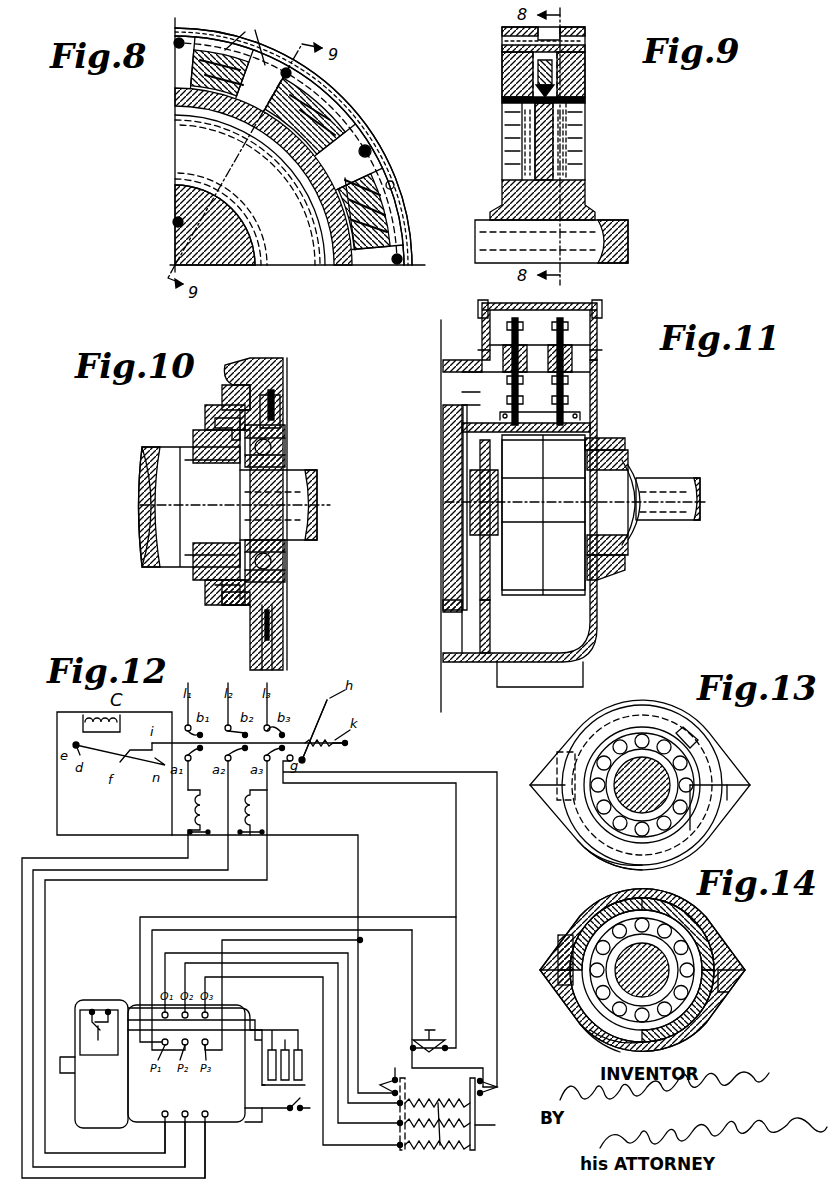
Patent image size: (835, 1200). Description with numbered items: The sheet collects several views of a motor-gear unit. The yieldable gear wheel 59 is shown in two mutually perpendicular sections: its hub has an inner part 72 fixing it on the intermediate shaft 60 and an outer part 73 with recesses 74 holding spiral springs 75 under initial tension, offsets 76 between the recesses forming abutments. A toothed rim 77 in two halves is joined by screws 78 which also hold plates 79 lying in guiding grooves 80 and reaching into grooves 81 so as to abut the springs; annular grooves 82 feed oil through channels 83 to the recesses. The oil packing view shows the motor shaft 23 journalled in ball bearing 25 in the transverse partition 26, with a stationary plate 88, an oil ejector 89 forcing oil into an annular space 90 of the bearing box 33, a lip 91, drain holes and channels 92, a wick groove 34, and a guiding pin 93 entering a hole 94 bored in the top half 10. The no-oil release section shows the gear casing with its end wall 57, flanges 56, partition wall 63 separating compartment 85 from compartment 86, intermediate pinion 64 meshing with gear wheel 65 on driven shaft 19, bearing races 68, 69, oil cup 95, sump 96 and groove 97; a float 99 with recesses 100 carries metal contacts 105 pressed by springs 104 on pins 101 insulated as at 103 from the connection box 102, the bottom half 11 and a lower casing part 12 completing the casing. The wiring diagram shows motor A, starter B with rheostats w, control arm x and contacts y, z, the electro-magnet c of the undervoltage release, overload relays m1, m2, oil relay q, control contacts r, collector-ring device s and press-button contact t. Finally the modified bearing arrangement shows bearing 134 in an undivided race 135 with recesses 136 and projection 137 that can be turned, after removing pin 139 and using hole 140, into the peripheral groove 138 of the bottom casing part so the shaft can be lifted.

In FIG. 11, the top half of the casing 10 is at (570, 418).
In FIG. 13, the top half of the casing 10 is at (710, 745).
In FIG. 14, the top half of the casing 10 is at (585, 903).
In FIG. 11, the bottom half of the casing 11 is at (458, 660).
In FIG. 13, the bottom half of the casing 11 is at (732, 820).
In FIG. 14, the bottom half of the casing 11 is at (560, 1008).
In FIG. 11, the mounting flange 12 is at (583, 676).
In FIG. 11, the driven shaft 19 is at (668, 478).
In FIG. 10, the motor shaft 23 is at (290, 492).
In FIG. 10, the ball bearing 25 is at (285, 555).
In FIG. 10, the transverse partition 26 is at (270, 360).
In FIG. 10, the bearing box 33 is at (200, 445).
In FIG. 10, the groove 34 is at (238, 385).
In FIG. 11, the longitudinal flanges 56 is at (485, 640).
In FIG. 11, the end wall of the casing 57 is at (597, 625).
In FIG. 8, the gear wheel 59 is at (175, 152).
In FIG. 9, the gear wheel 59 is at (585, 138).
In FIG. 11, the gear wheel 59 is at (452, 500).
In FIG. 9, the intermediate shaft 60 is at (585, 242).
In FIG. 13, the intermediate shaft 60 is at (614, 790).
In FIG. 11, the partition wall 63 is at (470, 580).
In FIG. 11, the pinion 64 is at (620, 558).
In FIG. 11, the gear wheel 65 is at (605, 578).
In FIG. 11, the bearing race 68 is at (632, 470).
In FIG. 11, the bearing race 69 is at (475, 478).
In FIG. 8, the inner part of the hub 72 is at (240, 255).
In FIG. 9, the inner part of the hub 72 is at (585, 190).
In FIG. 8, the outer part of the hub 73 is at (350, 252).
In FIG. 9, the outer part of the hub 73 is at (585, 66).
In FIG. 8, the recesses 74 is at (330, 140).
In FIG. 9, the recesses 74 is at (552, 88).
In FIG. 8, the spiral springs 75 is at (385, 230).
In FIG. 9, the spiral springs 75 is at (585, 50).
In FIG. 9, the offsets 76 is at (550, 72).
In FIG. 8, the toothed rim 77 is at (385, 200).
In FIG. 9, the toothed rim 77 is at (585, 32).
In FIG. 8, the screws 78 is at (375, 178).
In FIG. 9, the screws 78 is at (502, 41).
In FIG. 8, the plates 79 is at (350, 160).
In FIG. 9, the plates 79 is at (548, 36).
In FIG. 8, the guiding grooves 80 is at (245, 32).
In FIG. 9, the grooves 81 is at (522, 115).
In FIG. 9, the annular grooves 82 is at (522, 145).
In FIG. 9, the channels 83 is at (585, 100).
In FIG. 11, the compartment 85 is at (463, 637).
In FIG. 11, the compartment 86 is at (545, 640).
In FIG. 10, the stationary plate 88 is at (283, 588).
In FIG. 10, the oil ejector 89 is at (210, 585).
In FIG. 10, the annular space 90 is at (212, 408).
In FIG. 10, the lip 91 is at (225, 423).
In FIG. 10, the holes and channels 92 is at (272, 640).
In FIG. 10, the guiding pin 93 is at (280, 400).
In FIG. 10, the hole 94 is at (275, 395).
In FIG. 11, the oil cup 95 is at (462, 410).
In FIG. 11, the oil sump 96 is at (483, 445).
In FIG. 11, the groove 97 is at (478, 404).
In FIG. 11, the float 99 is at (565, 400).
In FIG. 11, the recesses 100 is at (580, 416).
In FIG. 11, the pins 101 is at (590, 345).
In FIG. 11, the connection box 102 is at (597, 307).
In FIG. 11, the insulation 103 is at (597, 355).
In FIG. 11, the spring 104 is at (520, 395).
In FIG. 11, the metal contacts 105 is at (480, 425).
In FIG. 13, the bearing 134 is at (600, 805).
In FIG. 14, the bearing 134 is at (690, 1012).
In FIG. 13, the undivided race 135 is at (708, 770).
In FIG. 13, the recesses 136 is at (600, 842).
In FIG. 14, the recesses 136 is at (598, 1038).
In FIG. 13, the projection 137 is at (612, 855).
In FIG. 14, the projection 137 is at (610, 1045).
In FIG. 13, the peripheral groove 138 is at (722, 800).
In FIG. 14, the peripheral groove 138 is at (700, 1002).
In FIG. 13, the pin 139 is at (553, 768).
In FIG. 14, the pin 139 is at (556, 950).
In FIG. 13, the hole 140 is at (698, 738).
In FIG. 14, the hole 140 is at (700, 925).
In FIG. 12, the motor A is at (94, 1064).
In FIG. 12, the starter B is at (437, 1132).
In FIG. 12, the electro-magnet c is at (85, 714).
In FIG. 12, the overload relay m1 is at (113, 984).
In FIG. 12, the overload relay m2 is at (260, 812).
In FIG. 12, the oil relay q is at (98, 1031).
In FIG. 12, the control contacts r is at (287, 1101).
In FIG. 12, the collector-ring device s is at (300, 1060).
In FIG. 12, the contact t is at (435, 1038).
In FIG. 12, the rheostats w is at (440, 1088).
In FIG. 12, the movable control arm x is at (490, 1124).
In FIG. 12, the contact y is at (381, 1082).
In FIG. 12, the contact z is at (500, 1087).